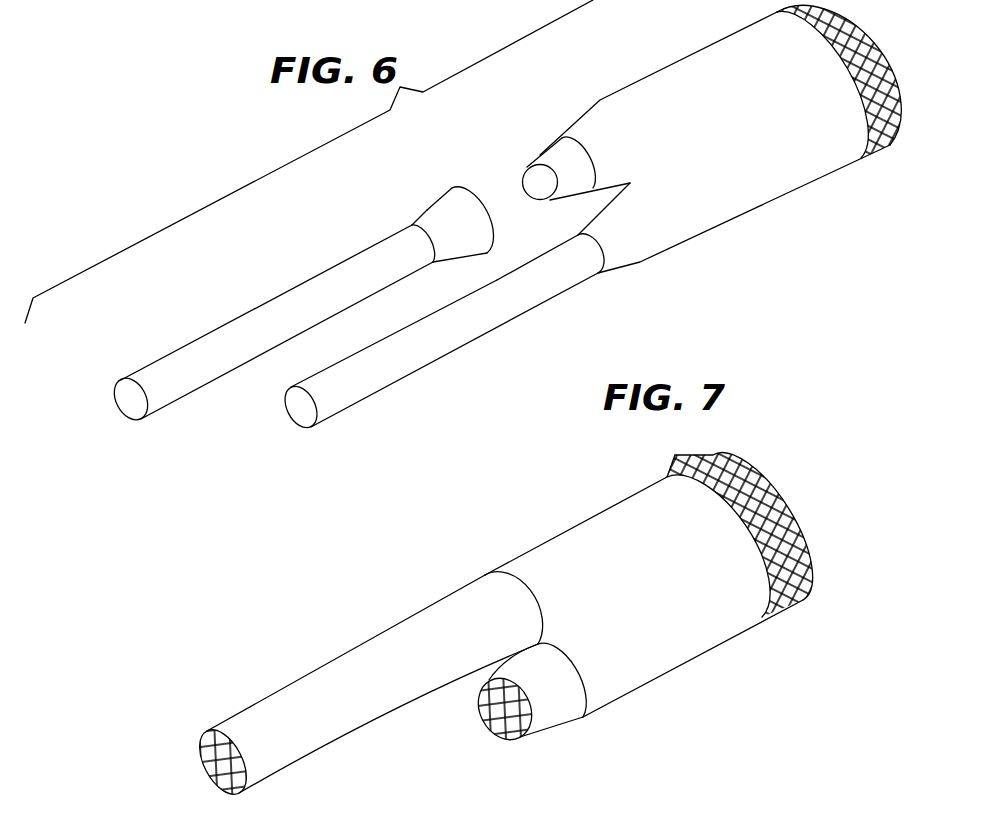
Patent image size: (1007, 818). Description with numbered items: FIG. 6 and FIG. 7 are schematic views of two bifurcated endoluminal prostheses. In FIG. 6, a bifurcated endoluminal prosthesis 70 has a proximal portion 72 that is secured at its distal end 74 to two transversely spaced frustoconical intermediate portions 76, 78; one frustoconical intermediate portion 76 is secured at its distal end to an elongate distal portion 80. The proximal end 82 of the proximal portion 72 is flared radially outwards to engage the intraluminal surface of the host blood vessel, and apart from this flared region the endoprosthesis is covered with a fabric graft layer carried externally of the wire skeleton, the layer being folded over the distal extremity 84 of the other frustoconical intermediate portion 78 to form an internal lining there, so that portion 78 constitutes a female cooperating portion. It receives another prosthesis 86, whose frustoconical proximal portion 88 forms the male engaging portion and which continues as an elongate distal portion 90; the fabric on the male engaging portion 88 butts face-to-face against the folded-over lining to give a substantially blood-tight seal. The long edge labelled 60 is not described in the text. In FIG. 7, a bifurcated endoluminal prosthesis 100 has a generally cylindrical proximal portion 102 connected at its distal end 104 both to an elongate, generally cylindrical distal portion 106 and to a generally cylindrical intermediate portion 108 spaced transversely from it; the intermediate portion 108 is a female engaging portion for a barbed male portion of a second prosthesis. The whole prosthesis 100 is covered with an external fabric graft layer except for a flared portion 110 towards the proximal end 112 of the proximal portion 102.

In FIG. 6, the cable jacket 60 is at (309, 161).
In FIG. 6, the bifurcated endoluminal prosthesis 70 is at (780, 210).
In FIG. 6, the proximal portion 72 is at (670, 64).
In FIG. 6, the distal end 74 is at (662, 242).
In FIG. 6, the frustoconical intermediate portion 76 is at (652, 263).
In FIG. 6, the other frustoconical intermediate portion 78 is at (545, 145).
In FIG. 6, the elongate distal portion 80 is at (460, 342).
In FIG. 6, the proximal end 82 is at (882, 38).
In FIG. 6, the distal extremity 84 is at (522, 181).
In FIG. 6, the other prosthesis 86 is at (260, 306).
In FIG. 6, the frustoconical proximal portion 88 is at (426, 209).
In FIG. 6, the elongate distal portion 90 is at (221, 370).
In FIG. 7, the bifurcated endoluminal prosthesis 100 is at (576, 513).
In FIG. 7, the proximal portion 102 is at (698, 635).
In FIG. 7, the distal end 104 is at (480, 575).
In FIG. 7, the elongate distal portion 106 is at (322, 666).
In FIG. 7, the intermediate portion 108 is at (558, 717).
In FIG. 7, the flared portion 110 is at (807, 527).
In FIG. 7, the proximal end 112 is at (765, 470).